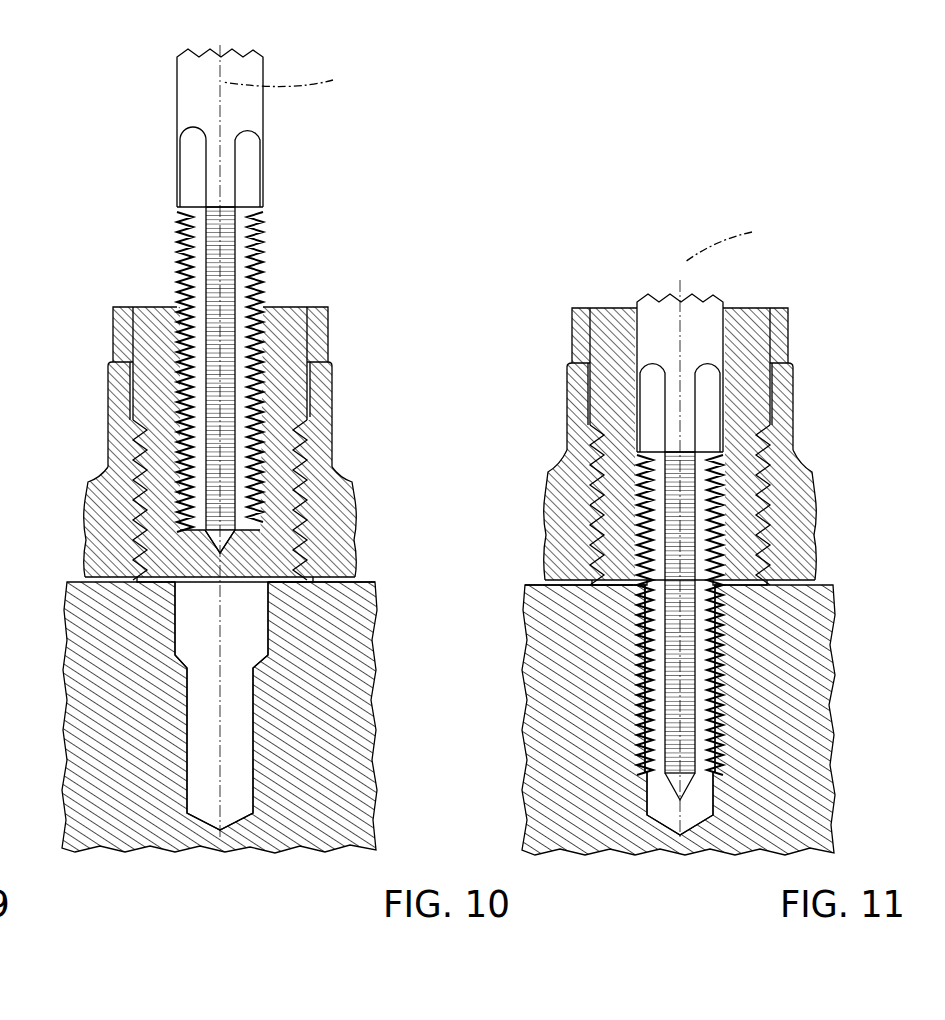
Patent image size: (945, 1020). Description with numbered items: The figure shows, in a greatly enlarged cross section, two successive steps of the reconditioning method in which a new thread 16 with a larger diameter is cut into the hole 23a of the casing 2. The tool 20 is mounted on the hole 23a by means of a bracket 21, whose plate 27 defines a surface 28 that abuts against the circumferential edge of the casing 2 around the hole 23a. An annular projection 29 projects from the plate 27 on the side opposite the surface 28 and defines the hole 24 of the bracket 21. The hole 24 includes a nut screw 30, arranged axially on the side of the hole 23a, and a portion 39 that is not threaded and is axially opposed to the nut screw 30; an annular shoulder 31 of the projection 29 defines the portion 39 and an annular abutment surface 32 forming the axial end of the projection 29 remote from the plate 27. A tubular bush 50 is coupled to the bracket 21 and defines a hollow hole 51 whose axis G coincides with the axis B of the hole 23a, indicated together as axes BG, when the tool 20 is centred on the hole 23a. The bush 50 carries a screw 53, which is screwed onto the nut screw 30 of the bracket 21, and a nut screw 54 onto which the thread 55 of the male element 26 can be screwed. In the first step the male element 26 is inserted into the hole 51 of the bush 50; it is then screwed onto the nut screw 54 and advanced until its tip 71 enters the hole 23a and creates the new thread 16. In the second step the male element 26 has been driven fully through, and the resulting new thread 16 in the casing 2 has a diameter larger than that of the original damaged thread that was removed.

In FIG. 10, the casing 2 is at (90, 662).
In FIG. 11, the casing 2 is at (535, 618).
In FIG. 11, the new thread 16 is at (716, 698).
In FIG. 10, the tool 20 is at (347, 453).
In FIG. 11, the tool 20 is at (816, 457).
In FIG. 10, the bracket 21 is at (328, 517).
In FIG. 11, the bracket 21 is at (795, 527).
In FIG. 10, the hole 23a is at (190, 772).
In FIG. 11, the hole 23a is at (708, 798).
In FIG. 10, the hole 24 is at (144, 380).
In FIG. 11, the hole 24 is at (604, 381).
In FIG. 10, the male element 26 is at (244, 111).
In FIG. 11, the male element 26 is at (694, 322).
In FIG. 10, the plate 27 is at (92, 490).
In FIG. 11, the plate 27 is at (547, 488).
In FIG. 10, the surface 28 is at (318, 588).
In FIG. 11, the surface 28 is at (576, 593).
In FIG. 10, the annular projection 29 is at (113, 407).
In FIG. 11, the annular projection 29 is at (577, 380).
In FIG. 10, the nut screw 30 is at (226, 553).
In FIG. 11, the nut screw 30 is at (750, 525).
In FIG. 10, the annular shoulder 31 is at (320, 368).
In FIG. 11, the annular shoulder 31 is at (778, 407).
In FIG. 10, the annular abutment surface 32 is at (118, 356).
In FIG. 11, the annular abutment surface 32 is at (583, 351).
In FIG. 10, the portion 39 is at (300, 381).
In FIG. 11, the portion 39 is at (765, 383).
In FIG. 10, the bush 50 is at (298, 333).
In FIG. 11, the bush 50 is at (755, 340).
In FIG. 10, the hollow hole 51 is at (190, 343).
In FIG. 11, the hollow hole 51 is at (637, 356).
In FIG. 10, the screw 53 is at (140, 540).
In FIG. 11, the screw 53 is at (592, 532).
In FIG. 10, the nut screw 54 is at (222, 560).
In FIG. 11, the nut screw 54 is at (612, 456).
In FIG. 10, the thread 55 is at (264, 227).
In FIG. 11, the thread 55 is at (655, 712).
In FIG. 10, the tip 71 is at (225, 548).
In FIG. 11, the tip 71 is at (672, 790).
In FIG. 10, the axes B, G BG is at (296, 78).
In FIG. 11, the axes B, G BG is at (735, 237).